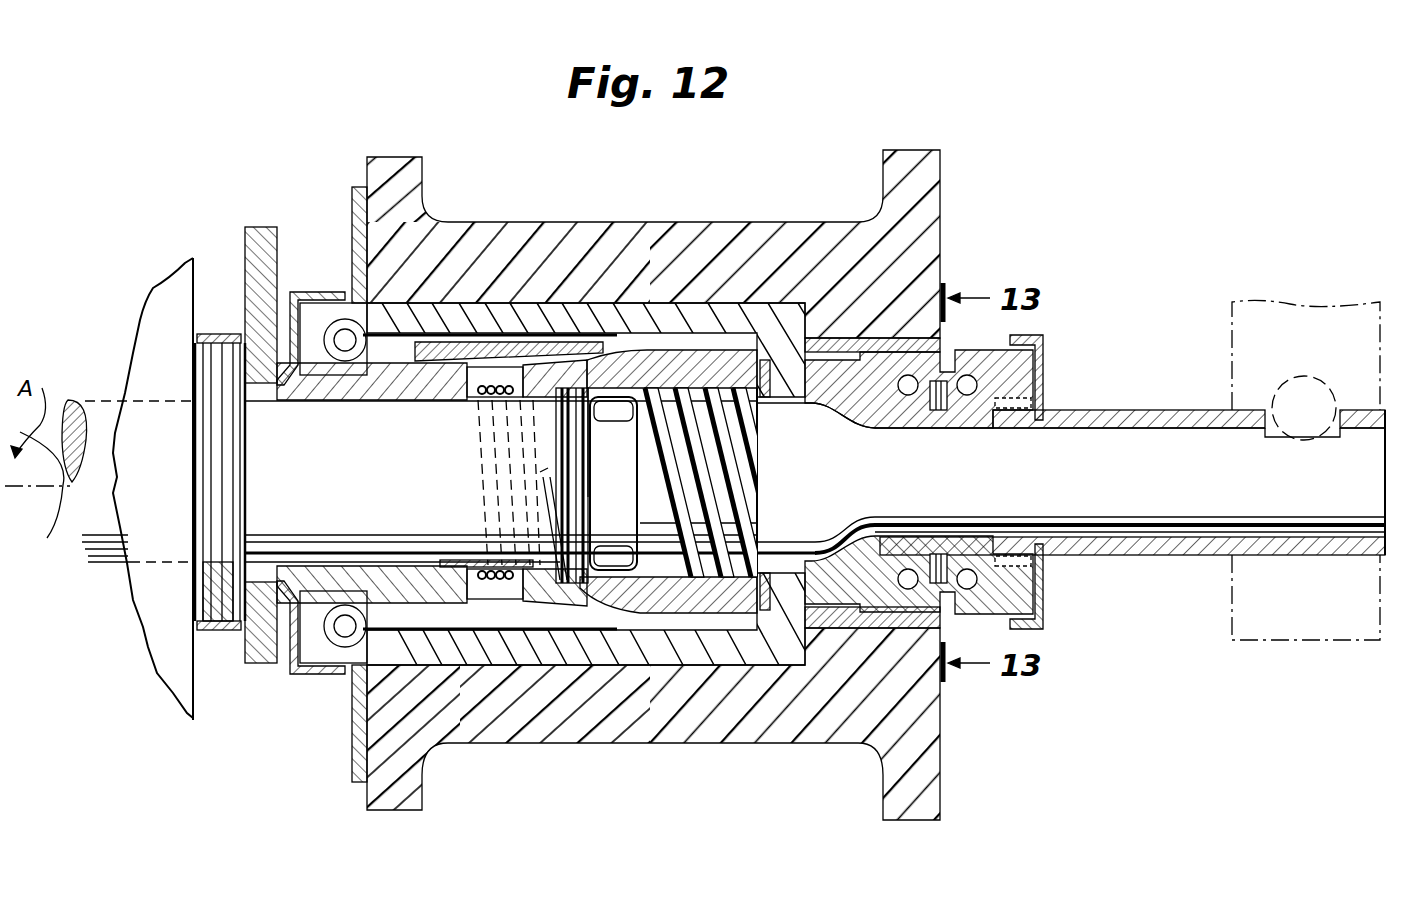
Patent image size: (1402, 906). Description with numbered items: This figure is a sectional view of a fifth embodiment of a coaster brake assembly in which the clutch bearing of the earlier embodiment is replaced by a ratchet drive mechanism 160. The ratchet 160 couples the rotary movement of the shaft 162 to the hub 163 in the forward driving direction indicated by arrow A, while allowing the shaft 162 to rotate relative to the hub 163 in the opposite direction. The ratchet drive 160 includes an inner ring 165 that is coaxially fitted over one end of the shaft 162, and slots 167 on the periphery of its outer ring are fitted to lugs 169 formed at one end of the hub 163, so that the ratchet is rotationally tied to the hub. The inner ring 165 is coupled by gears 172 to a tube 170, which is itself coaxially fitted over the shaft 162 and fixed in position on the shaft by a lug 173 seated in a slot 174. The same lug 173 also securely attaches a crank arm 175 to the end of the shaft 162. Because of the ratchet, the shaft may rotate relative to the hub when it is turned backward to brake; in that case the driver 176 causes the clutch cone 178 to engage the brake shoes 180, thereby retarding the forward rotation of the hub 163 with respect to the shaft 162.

The ratchet drive mechanism 160 is at (980, 611).
The shaft 162 is at (815, 482).
The hub 163 is at (917, 727).
The inner ring 165 is at (937, 418).
The slots 167 is at (937, 329).
The lugs 169 is at (852, 350).
The tube 170 is at (1160, 553).
The gears 172 is at (1040, 396).
The lug 173 is at (1300, 378).
The slot 174 is at (1285, 437).
The crank arm 175 is at (1290, 640).
The driver 176 is at (722, 488).
The clutch cone 178 is at (650, 370).
The brake shoes 180 is at (533, 357).